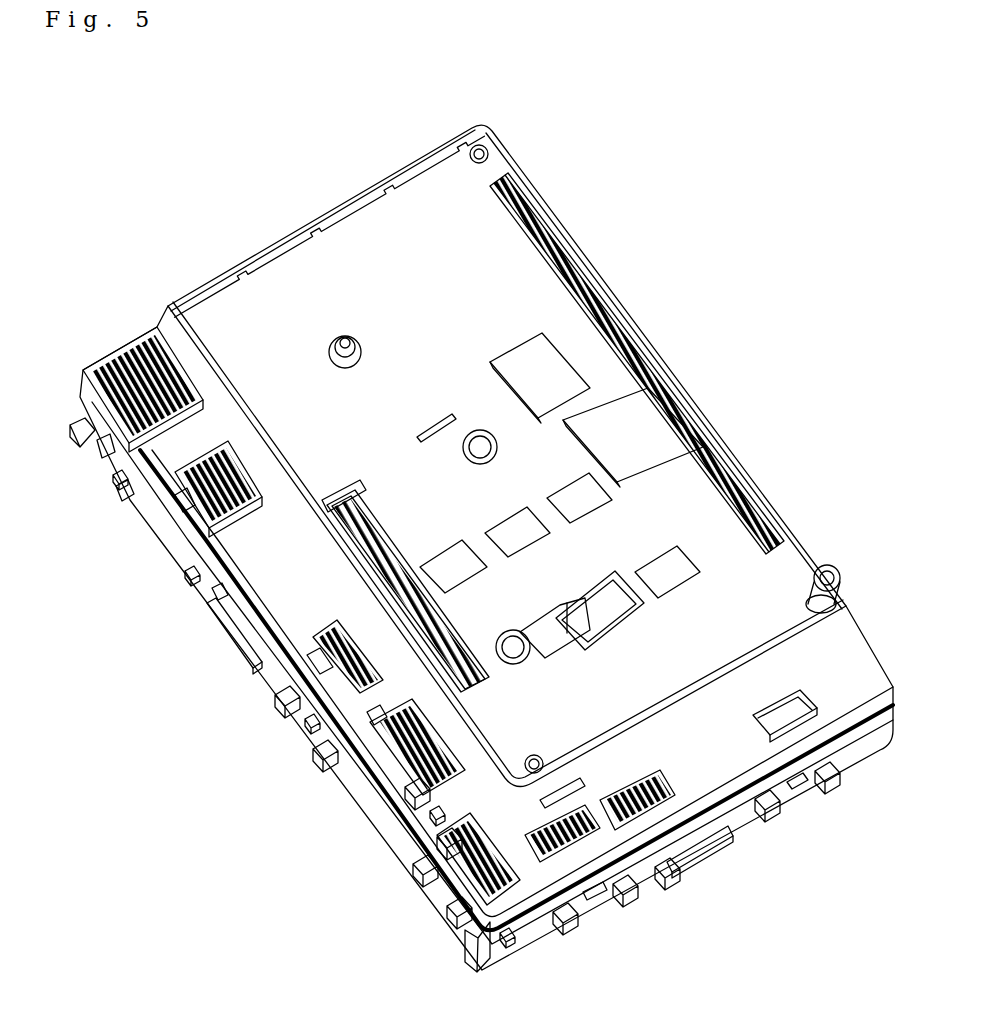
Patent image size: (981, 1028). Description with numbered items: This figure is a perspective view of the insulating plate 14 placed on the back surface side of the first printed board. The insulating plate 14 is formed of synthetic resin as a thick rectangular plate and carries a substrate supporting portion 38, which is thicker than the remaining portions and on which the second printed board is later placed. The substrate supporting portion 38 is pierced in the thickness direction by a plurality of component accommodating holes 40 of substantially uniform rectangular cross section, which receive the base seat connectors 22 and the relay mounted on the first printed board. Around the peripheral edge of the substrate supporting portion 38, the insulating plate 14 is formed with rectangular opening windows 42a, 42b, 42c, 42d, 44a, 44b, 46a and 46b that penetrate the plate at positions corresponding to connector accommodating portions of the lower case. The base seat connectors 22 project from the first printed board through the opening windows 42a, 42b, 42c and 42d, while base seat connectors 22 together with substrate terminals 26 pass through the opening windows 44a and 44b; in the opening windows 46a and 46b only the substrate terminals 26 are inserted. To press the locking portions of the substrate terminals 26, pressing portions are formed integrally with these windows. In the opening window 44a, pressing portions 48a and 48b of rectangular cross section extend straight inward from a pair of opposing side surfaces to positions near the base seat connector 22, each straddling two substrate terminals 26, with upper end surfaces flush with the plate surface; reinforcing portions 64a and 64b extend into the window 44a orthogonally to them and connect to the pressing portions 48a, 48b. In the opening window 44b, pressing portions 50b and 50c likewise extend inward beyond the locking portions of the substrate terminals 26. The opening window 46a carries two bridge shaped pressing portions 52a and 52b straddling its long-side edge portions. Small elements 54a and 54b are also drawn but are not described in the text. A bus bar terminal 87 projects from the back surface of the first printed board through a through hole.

The insulating plate 14 is at (505, 128).
The component accommodating holes 40 is at (557, 393).
The substrate supporting portion 38 is at (847, 612).
The opening window 46b is at (86, 400).
The hook 54b is at (102, 452).
The hook 54a is at (120, 496).
The substrate terminals 26 is at (113, 482).
The pressing portion 52b is at (178, 502).
The opening window 46a is at (208, 528).
The pressing portion 52a is at (220, 596).
The opening window 42d is at (258, 666).
The base seat connectors 22 is at (275, 700).
The opening window 44a is at (367, 718).
The reinforcing portion 64a is at (320, 756).
The pressing portion 48a is at (358, 694).
The reinforcing portion 64b is at (437, 840).
The pressing portion 48b is at (440, 797).
The pressing portion 50b is at (414, 872).
The opening window 44b is at (472, 906).
The bus bar terminal 87 is at (498, 945).
The pressing portion 50c is at (568, 930).
The opening window 42c is at (634, 906).
The opening window 42b is at (715, 868).
The opening window 42a is at (812, 722).